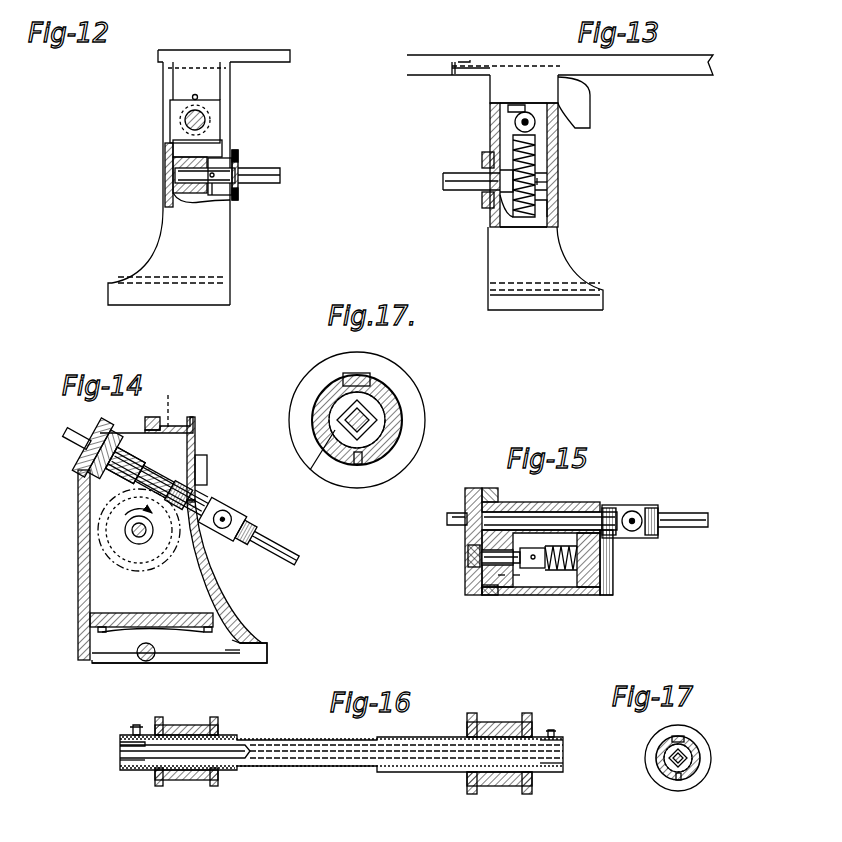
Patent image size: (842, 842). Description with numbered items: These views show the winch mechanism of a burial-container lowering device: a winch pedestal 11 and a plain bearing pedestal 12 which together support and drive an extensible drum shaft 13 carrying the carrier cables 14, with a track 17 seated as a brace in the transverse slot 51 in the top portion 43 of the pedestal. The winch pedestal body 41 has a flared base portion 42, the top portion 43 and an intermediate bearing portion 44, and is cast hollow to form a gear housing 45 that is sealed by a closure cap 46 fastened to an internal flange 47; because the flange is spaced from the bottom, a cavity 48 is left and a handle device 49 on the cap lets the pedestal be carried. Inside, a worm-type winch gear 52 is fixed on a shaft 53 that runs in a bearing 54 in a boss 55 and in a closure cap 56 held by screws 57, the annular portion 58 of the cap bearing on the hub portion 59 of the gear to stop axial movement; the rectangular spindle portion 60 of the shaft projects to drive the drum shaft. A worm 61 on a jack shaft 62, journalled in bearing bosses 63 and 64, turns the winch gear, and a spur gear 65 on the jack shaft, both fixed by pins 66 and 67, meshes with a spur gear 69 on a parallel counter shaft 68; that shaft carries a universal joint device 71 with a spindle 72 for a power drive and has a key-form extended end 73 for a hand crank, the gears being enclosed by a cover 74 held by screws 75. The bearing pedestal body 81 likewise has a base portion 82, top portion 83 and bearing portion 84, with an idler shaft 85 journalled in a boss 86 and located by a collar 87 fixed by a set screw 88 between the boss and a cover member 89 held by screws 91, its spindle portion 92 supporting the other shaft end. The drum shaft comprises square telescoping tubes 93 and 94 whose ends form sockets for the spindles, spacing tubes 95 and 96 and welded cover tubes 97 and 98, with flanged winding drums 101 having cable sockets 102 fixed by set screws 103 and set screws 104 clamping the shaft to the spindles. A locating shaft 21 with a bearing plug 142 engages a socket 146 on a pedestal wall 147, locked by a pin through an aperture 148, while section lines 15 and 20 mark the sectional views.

In FIG. 13, the winch pedestal 11 is at (572, 265).
In FIG. 14, the winch pedestal 11 is at (196, 428).
In FIG. 12, the plain bearing pedestal 12 is at (233, 250).
In FIG. 16, the drum shaft 13 is at (312, 772).
In FIG. 13, the carrier cables 14 is at (525, 20).
In FIG. 14, the section line 15— 15 is at (42, 398).
In FIG. 12, the track 17 is at (262, 50).
In FIG. 13, the track 17 is at (645, 80).
In FIG. 14, the track 17 is at (170, 396).
In FIG. 16, the track 17 is at (486, 705).
In FIG. 13, the section line 20 is at (462, 38).
In FIG. 12, the locating shaft 21 is at (184, 120).
In FIG. 13, the body 41 is at (488, 266).
In FIG. 14, the body 41 is at (78, 598).
In FIG. 15, the body 41 is at (610, 598).
In FIG. 13, the base portion 42 is at (602, 300).
In FIG. 14, the base portion 42 is at (265, 645).
In FIG. 13, the top portion 43 is at (522, 80).
In FIG. 14, the top portion 43 is at (150, 418).
In FIG. 15, the top portion 43 is at (590, 596).
In FIG. 13, the bearing portion 44 is at (550, 180).
In FIG. 14, the bearing portion 44 is at (97, 532).
In FIG. 13, the gear housing 45 is at (548, 212).
In FIG. 14, the gear housing 45 is at (207, 592).
In FIG. 14, the closure cap 46 is at (136, 620).
In FIG. 14, the flange 47 is at (222, 622).
In FIG. 14, the cavity 48 is at (228, 655).
In FIG. 14, the handle device 49 is at (147, 661).
In FIG. 13, the transverse slot 51 is at (495, 66).
In FIG. 14, the transverse slot 51 is at (185, 422).
In FIG. 13, the winch gear 52 is at (520, 217).
In FIG. 14, the winch gear 52 is at (120, 565).
In FIG. 13, the shaft 53 is at (548, 186).
In FIG. 14, the shaft 53 is at (139, 538).
In FIG. 13, the bearing 54 is at (545, 170).
In FIG. 13, the boss 55 is at (558, 158).
In FIG. 13, the closure cap 56 is at (482, 158).
In FIG. 13, the screws 57 is at (482, 200).
In FIG. 13, the annular portion 58 is at (500, 174).
In FIG. 13, the hub portion 59 is at (485, 210).
In FIG. 13, the spindle portion 60 is at (442, 182).
In FIG. 14, the worm 61 is at (182, 470).
In FIG. 15, the worm 61 is at (565, 572).
In FIG. 13, the jack shaft 62 is at (508, 110).
In FIG. 14, the jack shaft 62 is at (125, 470).
In FIG. 15, the jack shaft 62 is at (505, 580).
In FIG. 13, the bearing boss 63 is at (515, 124).
In FIG. 14, the bearing boss 63 is at (130, 486).
In FIG. 15, the bearing boss 63 is at (518, 590).
In FIG. 14, the bearing boss 64 is at (197, 540).
In FIG. 15, the bearing boss 64 is at (613, 583).
In FIG. 14, the spur gear 65 is at (82, 470).
In FIG. 15, the spur gear 65 is at (468, 550).
In FIG. 15, the pin 66 is at (470, 558).
In FIG. 15, the pin 67 is at (533, 568).
In FIG. 15, the counter shaft 68 is at (550, 520).
In FIG. 15, the spur gear 69 is at (510, 503).
In FIG. 14, the universal joint device 71 is at (232, 515).
In FIG. 15, the universal joint device 71 is at (634, 512).
In FIG. 14, the spindle 72 is at (270, 548).
In FIG. 15, the spindle 72 is at (690, 512).
In FIG. 14, the extended end 73 is at (60, 440).
In FIG. 15, the extended end 73 is at (446, 515).
In FIG. 14, the cover 74 is at (100, 418).
In FIG. 15, the cover 74 is at (470, 492).
In FIG. 15, the screws 75 is at (488, 488).
In FIG. 12, the body 81 is at (162, 222).
In FIG. 12, the base portion 82 is at (108, 293).
In FIG. 12, the top portion 83 is at (172, 86).
In FIG. 12, the bearing portion 84 is at (166, 155).
In FIG. 12, the idler shaft 85 is at (176, 176).
In FIG. 12, the boss 86 is at (170, 200).
In FIG. 12, the collar 87 is at (212, 165).
In FIG. 12, the set screw 88 is at (214, 196).
In FIG. 12, the cover member 89 is at (240, 165).
In FIG. 12, the screws 91 is at (240, 158).
In FIG. 12, the spindle portion 92 is at (278, 175).
In FIG. 16, the telescoping tube 93 is at (563, 760).
In FIG. 17, the telescoping tube 93 is at (370, 432).
In FIG. 14, the telescoping tube 94 is at (254, 491).
In FIG. 16, the telescoping tube 94 is at (120, 752).
In FIG. 17, the telescoping tube 94 is at (720, 786).
In FIG. 16, the spacing tube 95 is at (560, 744).
In FIG. 17, the spacing tube 95 is at (378, 420).
In FIG. 16, the spacing tube 96 is at (120, 736).
In FIG. 16, the cover tube 97 is at (555, 738).
In FIG. 17, the cover tube 97 is at (390, 400).
In FIG. 16, the cover tube 98 is at (125, 740).
In FIG. 16, the flanged winding drum 101 is at (222, 728).
In FIG. 17, the flanged winding drum 101 is at (322, 370).
In FIG. 16, the socket 102 is at (200, 714).
In FIG. 17, the socket 102 is at (360, 378).
In FIG. 16, the set screws 103 is at (185, 780).
In FIG. 17, the set screws 103 is at (358, 466).
In FIG. 16, the set screws 104 is at (138, 724).
In FIG. 12, the bearing plug 142 is at (192, 115).
In FIG. 12, the socket 146 is at (215, 120).
In FIG. 14, the socket 146 is at (207, 462).
In FIG. 12, the wall 147 is at (228, 90).
In FIG. 14, the wall 147 is at (196, 445).
In FIG. 12, the aperture 148 is at (195, 95).